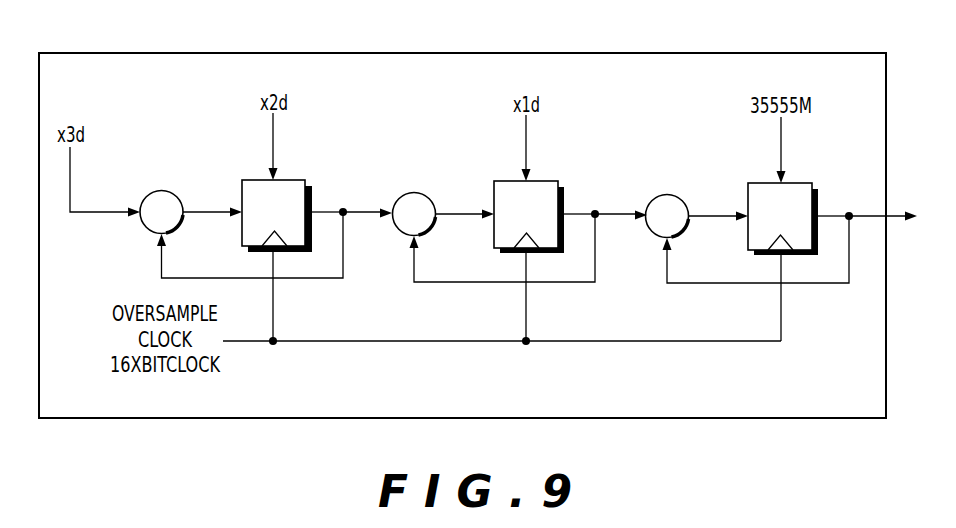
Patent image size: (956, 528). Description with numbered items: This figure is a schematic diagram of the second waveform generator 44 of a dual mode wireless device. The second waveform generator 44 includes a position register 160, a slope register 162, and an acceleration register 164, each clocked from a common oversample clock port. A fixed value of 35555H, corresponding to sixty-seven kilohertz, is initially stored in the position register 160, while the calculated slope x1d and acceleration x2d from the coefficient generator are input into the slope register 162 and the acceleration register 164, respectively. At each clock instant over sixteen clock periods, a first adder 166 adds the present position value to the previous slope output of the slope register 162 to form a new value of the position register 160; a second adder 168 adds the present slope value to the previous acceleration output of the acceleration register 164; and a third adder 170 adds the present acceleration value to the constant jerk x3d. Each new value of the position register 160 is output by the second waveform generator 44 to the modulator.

The second waveform generator 44 is at (688, 52).
The position register 160 is at (805, 184).
The slope register 162 is at (548, 182).
The acceleration register 164 is at (292, 181).
The first adder 166 is at (669, 191).
The second adder 168 is at (414, 190).
The third adder 170 is at (162, 189).